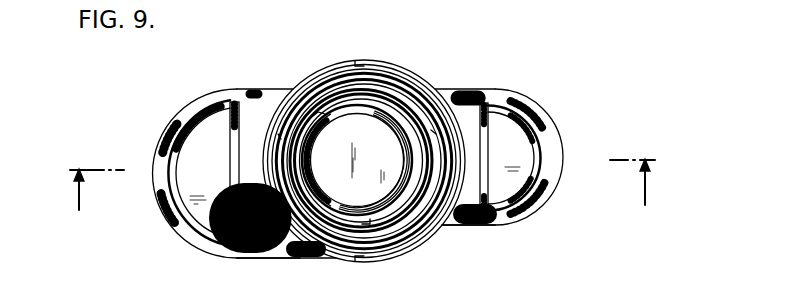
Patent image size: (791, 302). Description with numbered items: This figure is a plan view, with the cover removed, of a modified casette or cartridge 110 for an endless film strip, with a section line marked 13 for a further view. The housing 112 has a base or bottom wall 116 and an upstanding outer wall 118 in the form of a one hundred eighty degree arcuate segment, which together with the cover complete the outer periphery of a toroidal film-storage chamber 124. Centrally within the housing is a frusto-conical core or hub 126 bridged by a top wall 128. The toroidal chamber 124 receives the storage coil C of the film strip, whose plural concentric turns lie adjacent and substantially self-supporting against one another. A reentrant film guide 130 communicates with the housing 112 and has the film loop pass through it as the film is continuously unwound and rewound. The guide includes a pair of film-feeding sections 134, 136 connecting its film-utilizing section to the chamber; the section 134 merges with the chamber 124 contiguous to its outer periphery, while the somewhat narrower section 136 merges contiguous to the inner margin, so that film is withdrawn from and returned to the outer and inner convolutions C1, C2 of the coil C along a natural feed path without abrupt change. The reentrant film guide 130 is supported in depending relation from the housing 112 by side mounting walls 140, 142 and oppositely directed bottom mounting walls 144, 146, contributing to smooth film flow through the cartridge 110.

The casette or cartridge 110 is at (580, 93).
The housing 112 is at (302, 77).
The base or bottom wall 116 is at (393, 75).
The upstanding outer wall 118 is at (312, 257).
The toroidal film-storage chamber 124 is at (307, 228).
The frusto-conical core or hub 126 is at (403, 162).
The top wall 128 is at (349, 154).
The reentrant film guide 130 is at (165, 212).
The film-feeding section 134 is at (218, 250).
The film-feeding section 136 is at (490, 226).
The side mounting wall 140 is at (233, 104).
The side mounting wall 142 is at (490, 122).
The bottom mounting wall 144 is at (200, 202).
The bottom mounting wall 146 is at (530, 157).
The storage coil C is at (280, 137).
The outer convolution C1 is at (433, 132).
The inner convolution C2 is at (318, 195).
The section line 13- 13 is at (366, 188).